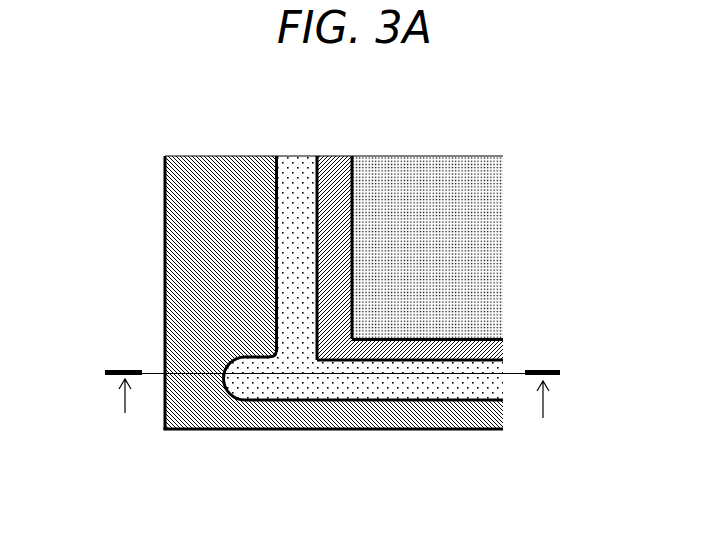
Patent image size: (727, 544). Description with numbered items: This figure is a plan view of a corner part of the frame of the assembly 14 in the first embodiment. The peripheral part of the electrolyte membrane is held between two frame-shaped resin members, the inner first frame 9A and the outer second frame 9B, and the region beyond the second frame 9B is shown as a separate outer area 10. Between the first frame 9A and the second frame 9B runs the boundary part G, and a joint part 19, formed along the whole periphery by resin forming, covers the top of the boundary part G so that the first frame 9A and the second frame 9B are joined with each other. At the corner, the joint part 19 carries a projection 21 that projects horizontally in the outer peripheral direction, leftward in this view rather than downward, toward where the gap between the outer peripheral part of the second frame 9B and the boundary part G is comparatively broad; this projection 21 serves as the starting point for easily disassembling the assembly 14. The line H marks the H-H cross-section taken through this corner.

The assembly 14 is at (158, 123).
The projection 21 is at (243, 357).
The first frame 9A is at (338, 170).
The second frame 9B is at (381, 407).
The core member 10 is at (503, 216).
The joint part 19 is at (453, 389).
The boundary part G is at (295, 162).
The H-H cross-section line H is at (345, 400).